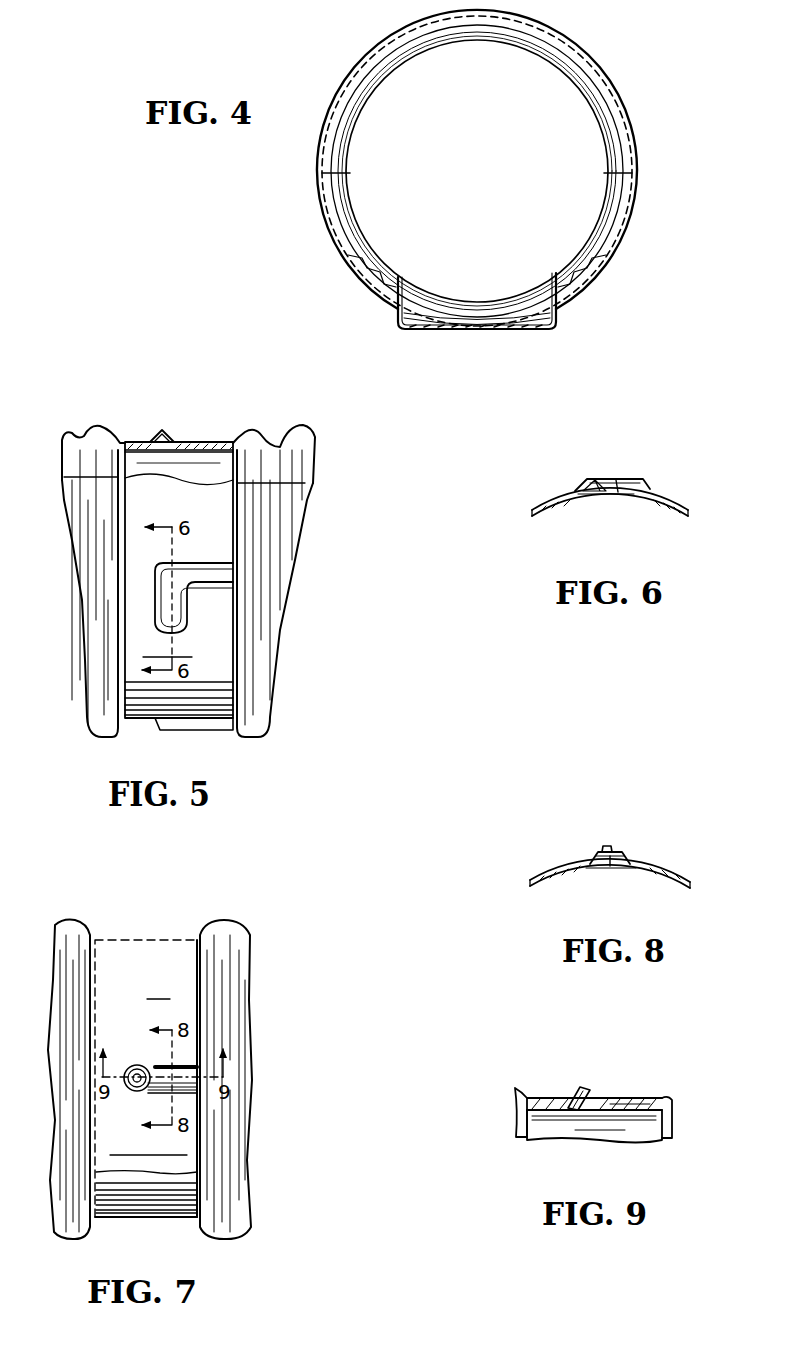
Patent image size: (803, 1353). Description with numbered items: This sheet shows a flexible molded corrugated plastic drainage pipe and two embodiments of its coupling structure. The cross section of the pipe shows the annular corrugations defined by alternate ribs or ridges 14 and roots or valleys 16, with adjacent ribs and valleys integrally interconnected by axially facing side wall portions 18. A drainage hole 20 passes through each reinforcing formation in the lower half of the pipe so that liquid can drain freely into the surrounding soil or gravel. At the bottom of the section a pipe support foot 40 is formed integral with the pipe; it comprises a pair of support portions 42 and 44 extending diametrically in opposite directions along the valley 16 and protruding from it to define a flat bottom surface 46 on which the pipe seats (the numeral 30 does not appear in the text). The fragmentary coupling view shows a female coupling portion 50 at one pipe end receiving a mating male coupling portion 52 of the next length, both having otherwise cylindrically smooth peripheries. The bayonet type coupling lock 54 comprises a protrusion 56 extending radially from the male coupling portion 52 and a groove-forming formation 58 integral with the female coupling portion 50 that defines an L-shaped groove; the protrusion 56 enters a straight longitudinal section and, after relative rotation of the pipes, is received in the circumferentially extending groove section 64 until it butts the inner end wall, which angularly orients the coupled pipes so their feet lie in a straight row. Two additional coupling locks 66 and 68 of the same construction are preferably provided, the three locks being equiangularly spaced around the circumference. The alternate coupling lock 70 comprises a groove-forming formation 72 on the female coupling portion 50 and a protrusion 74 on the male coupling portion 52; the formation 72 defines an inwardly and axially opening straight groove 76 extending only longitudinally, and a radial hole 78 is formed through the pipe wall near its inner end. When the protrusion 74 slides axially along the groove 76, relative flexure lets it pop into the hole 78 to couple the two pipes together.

In FIG. 4, the ribs or ridges 14 is at (611, 84).
In FIG. 4, the roots or valleys 16 is at (560, 76).
In FIG. 4, the side wall portions 18 is at (553, 58).
In FIG. 4, the drainage hole 20 is at (332, 237).
In FIG. 4, the base bottom wall 30 is at (452, 334).
In FIG. 4, the pipe support foot 40 is at (556, 339).
In FIG. 4, the support portion 42 is at (560, 326).
In FIG. 4, the support portion 44 is at (398, 329).
In FIG. 4, the flat bottom surface 46 is at (428, 334).
In FIG. 5, the female coupling portion 50 is at (132, 440).
In FIG. 6, the female coupling portion 50 is at (560, 496).
In FIG. 7, the female coupling portion 50 is at (150, 1080).
In FIG. 8, the female coupling portion 50 is at (670, 868).
In FIG. 9, the female coupling portion 50 is at (552, 1098).
In FIG. 5, the male coupling portion 52 is at (215, 440).
In FIG. 6, the male coupling portion 52 is at (645, 483).
In FIG. 7, the male coupling portion 52 is at (133, 940).
In FIG. 8, the male coupling portion 52 is at (578, 872).
In FIG. 9, the male coupling portion 52 is at (547, 1112).
In FIG. 5, the coupling lock 54 is at (208, 555).
In FIG. 5, the protrusion 56 is at (163, 436).
In FIG. 6, the protrusion 56 is at (610, 478).
In FIG. 5, the groove-forming formation 58 is at (214, 590).
In FIG. 6, the groove-forming formation 58 is at (598, 478).
In FIG. 6, the circumferentially extending groove section 64 is at (618, 494).
In FIG. 5, the coupling lock 66 is at (216, 732).
In FIG. 5, the coupling lock 68 is at (203, 424).
In FIG. 7, the coupling lock 70 is at (192, 1066).
In FIG. 7, the groove-forming formation 72 is at (180, 1094).
In FIG. 8, the groove-forming formation 72 is at (620, 855).
In FIG. 9, the groove-forming formation 72 is at (658, 1097).
In FIG. 7, the protrusion 74 is at (135, 1091).
In FIG. 8, the protrusion 74 is at (607, 847).
In FIG. 9, the protrusion 74 is at (584, 1089).
In FIG. 8, the straight groove 76 is at (618, 862).
In FIG. 9, the straight groove 76 is at (641, 1102).
In FIG. 7, the radial hole 78 is at (141, 1087).
In FIG. 9, the radial hole 78 is at (593, 1097).